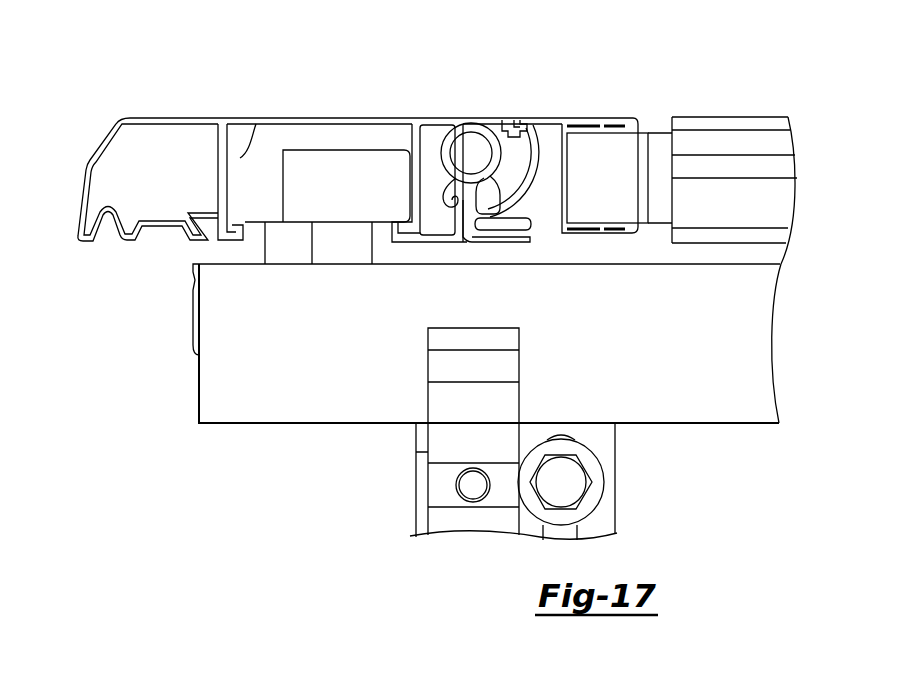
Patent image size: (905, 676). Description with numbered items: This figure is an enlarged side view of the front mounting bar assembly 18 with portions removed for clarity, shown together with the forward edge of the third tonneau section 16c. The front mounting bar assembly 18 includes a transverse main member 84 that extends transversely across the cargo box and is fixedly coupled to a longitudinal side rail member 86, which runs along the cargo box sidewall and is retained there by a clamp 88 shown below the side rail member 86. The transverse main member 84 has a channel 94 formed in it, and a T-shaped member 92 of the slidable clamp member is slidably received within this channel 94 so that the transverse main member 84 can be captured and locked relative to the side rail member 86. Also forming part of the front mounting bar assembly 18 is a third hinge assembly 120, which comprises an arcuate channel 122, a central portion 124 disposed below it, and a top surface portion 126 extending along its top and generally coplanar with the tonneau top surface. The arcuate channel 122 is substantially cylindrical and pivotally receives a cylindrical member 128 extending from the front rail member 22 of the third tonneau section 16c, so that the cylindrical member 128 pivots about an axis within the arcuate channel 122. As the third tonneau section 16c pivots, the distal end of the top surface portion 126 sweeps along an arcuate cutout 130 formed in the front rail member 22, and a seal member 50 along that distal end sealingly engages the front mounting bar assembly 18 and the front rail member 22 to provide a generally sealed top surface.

The front mounting bar assembly 18 is at (310, 108).
The transverse main member 84 is at (333, 117).
The T-shaped member 92 is at (391, 152).
The channel 94 is at (240, 158).
The third hinge assembly 120 is at (526, 162).
The arcuate channel 122 is at (462, 126).
The central portion 124 is at (419, 243).
The top surface portion 126 is at (514, 120).
The cylindrical member 128 is at (490, 178).
The arcuate cutout 130 is at (522, 182).
The seal member 50 is at (526, 136).
The front rail member 22 is at (627, 117).
The third tonneau section 16c is at (765, 117).
The longitudinal side rail member 86 is at (728, 412).
The clamp 88 is at (438, 513).